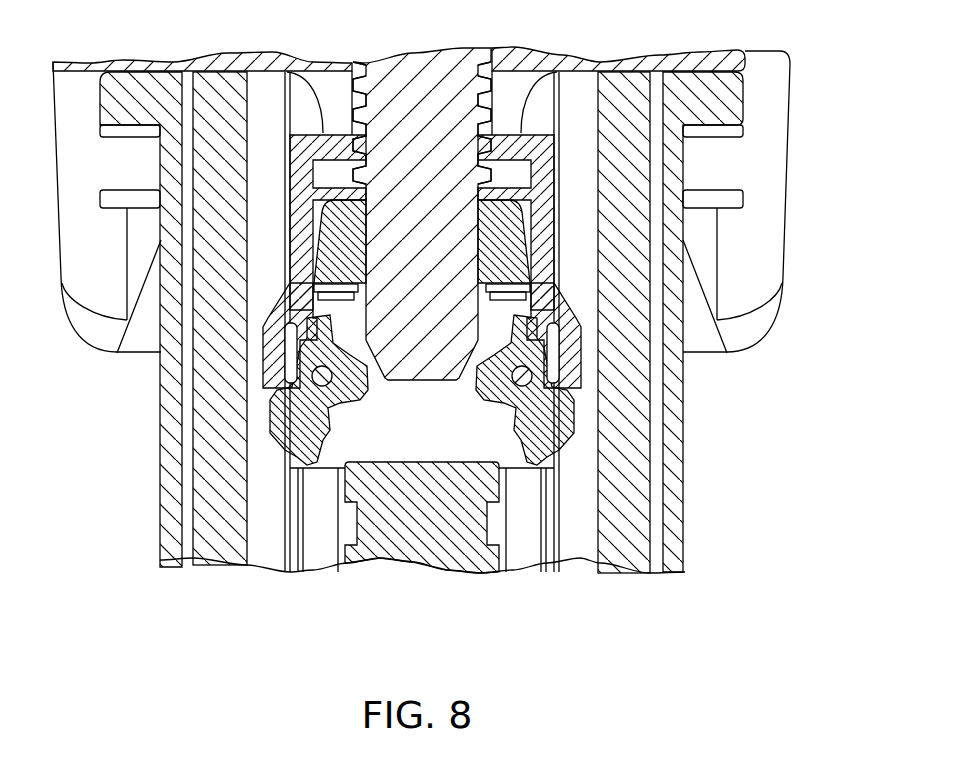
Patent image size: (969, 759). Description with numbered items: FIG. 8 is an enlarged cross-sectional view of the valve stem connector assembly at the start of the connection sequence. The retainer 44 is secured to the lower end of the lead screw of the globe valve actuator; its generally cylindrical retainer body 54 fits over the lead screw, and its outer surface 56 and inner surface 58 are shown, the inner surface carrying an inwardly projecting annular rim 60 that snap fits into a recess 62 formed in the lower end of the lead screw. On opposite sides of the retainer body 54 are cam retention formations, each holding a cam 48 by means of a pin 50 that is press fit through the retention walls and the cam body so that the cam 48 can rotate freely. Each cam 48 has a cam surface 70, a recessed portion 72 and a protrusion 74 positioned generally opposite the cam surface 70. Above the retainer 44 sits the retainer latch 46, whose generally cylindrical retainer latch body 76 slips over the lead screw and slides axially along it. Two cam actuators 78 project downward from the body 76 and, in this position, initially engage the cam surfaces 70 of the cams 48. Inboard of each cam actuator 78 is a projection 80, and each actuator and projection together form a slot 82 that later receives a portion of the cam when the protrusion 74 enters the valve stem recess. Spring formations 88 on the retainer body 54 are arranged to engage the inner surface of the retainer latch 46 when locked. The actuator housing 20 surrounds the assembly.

The housing 20 is at (625, 555).
The retainer 44 is at (525, 230).
The retainer latch 46 is at (301, 138).
The cam 48 is at (273, 450).
The pin 50 is at (283, 433).
The retainer body 54 is at (337, 247).
The outer surface 56 is at (300, 203).
The inner surface 58 is at (455, 245).
The annular rim 60 is at (410, 258).
The recess 62 is at (640, 268).
The cam surface 70 is at (288, 380).
The recessed portion 72 is at (415, 390).
The protrusion 74 is at (320, 470).
The retainer latch body 76 is at (543, 170).
The cam actuator 78 is at (290, 345).
The projection 80 is at (313, 330).
The slot 82 is at (228, 353).
The spring formation 88 is at (540, 285).